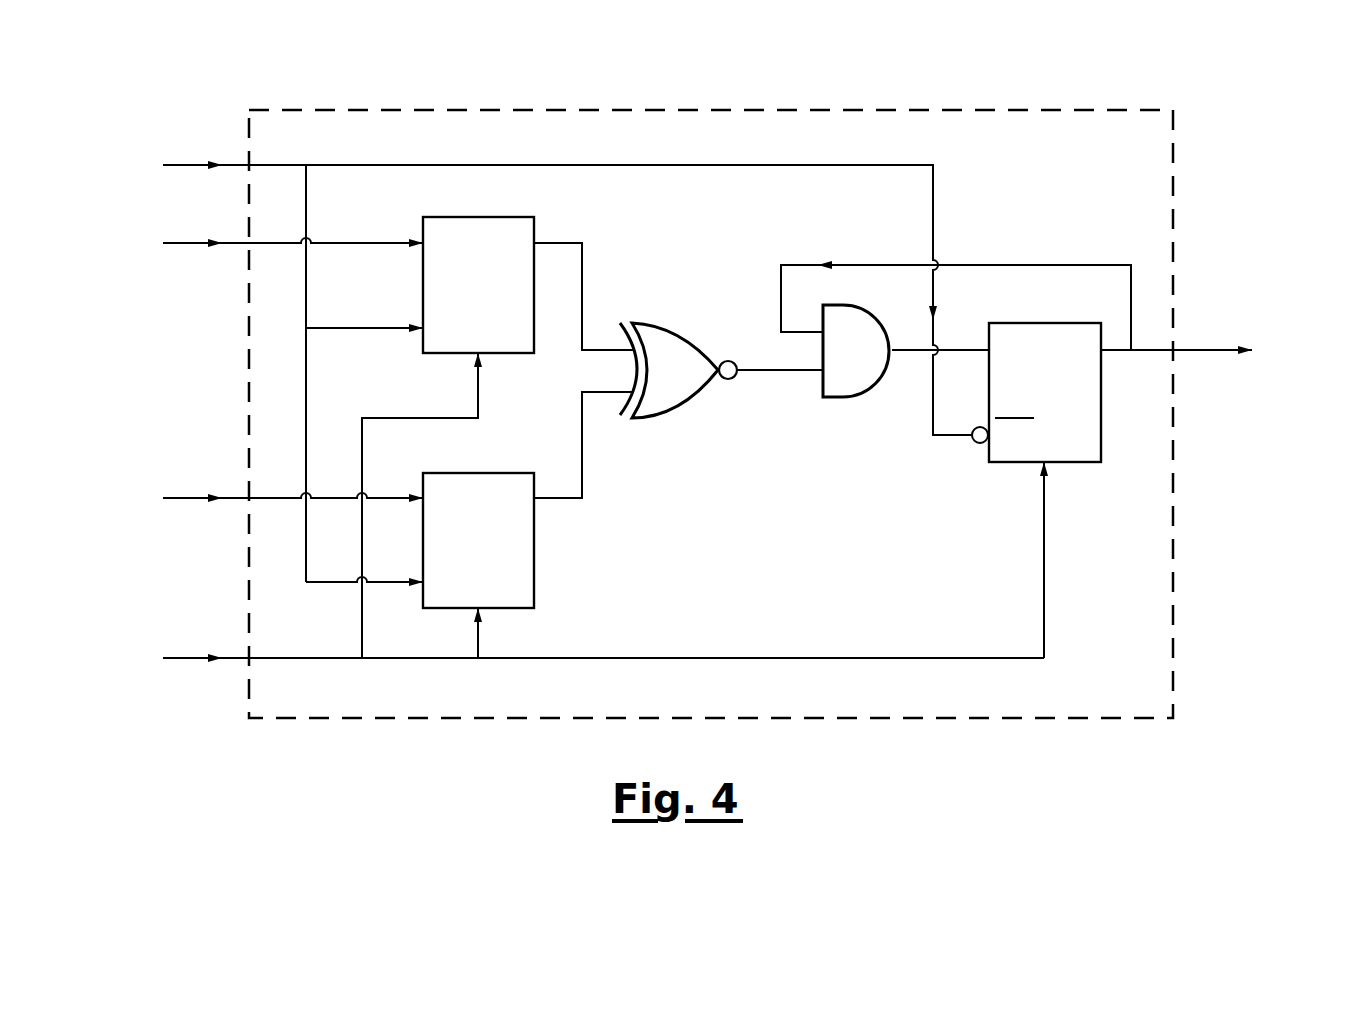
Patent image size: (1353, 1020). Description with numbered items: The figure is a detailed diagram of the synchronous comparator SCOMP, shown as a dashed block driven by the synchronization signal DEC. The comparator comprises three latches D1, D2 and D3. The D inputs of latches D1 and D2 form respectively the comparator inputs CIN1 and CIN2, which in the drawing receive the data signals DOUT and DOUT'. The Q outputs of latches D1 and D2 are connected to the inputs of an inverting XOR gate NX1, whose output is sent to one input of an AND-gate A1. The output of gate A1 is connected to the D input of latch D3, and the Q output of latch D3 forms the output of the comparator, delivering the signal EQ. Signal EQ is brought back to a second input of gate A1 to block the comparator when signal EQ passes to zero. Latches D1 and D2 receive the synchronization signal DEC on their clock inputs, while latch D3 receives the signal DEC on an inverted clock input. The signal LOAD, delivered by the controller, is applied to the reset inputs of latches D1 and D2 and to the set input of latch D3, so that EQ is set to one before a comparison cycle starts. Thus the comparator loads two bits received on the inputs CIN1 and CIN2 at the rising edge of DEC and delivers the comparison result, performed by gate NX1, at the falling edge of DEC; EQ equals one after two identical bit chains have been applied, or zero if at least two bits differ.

The synchronous comparator SCOMP is at (1176, 151).
The latch D1 is at (496, 555).
The latch D2 is at (496, 299).
The latch D3 is at (1063, 407).
The inverting XOR gate NX1 is at (700, 382).
The AND-gate A1 is at (834, 362).
The comparator input CIN1 is at (237, 490).
The comparator input CIN2 is at (236, 255).
The synchronization signal DEC is at (540, 363).
The data output signal DOUT is at (248, 236).
The complementary data output signal DOUT' is at (248, 491).
The load signal LOAD is at (558, 509).
The equal signal EQ is at (1200, 351).